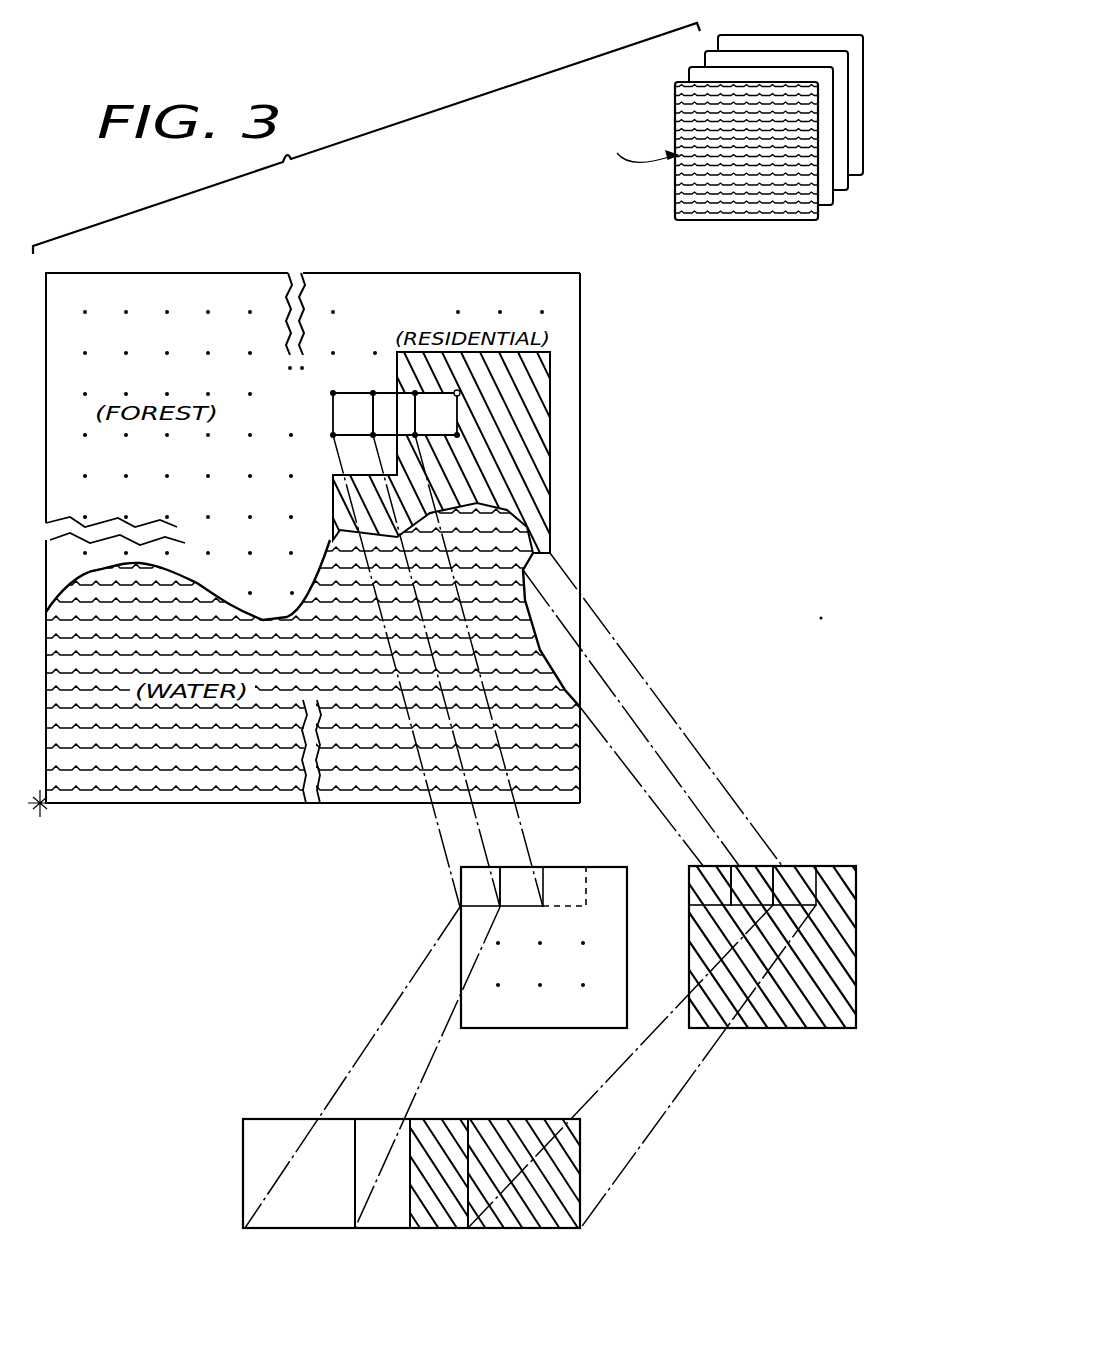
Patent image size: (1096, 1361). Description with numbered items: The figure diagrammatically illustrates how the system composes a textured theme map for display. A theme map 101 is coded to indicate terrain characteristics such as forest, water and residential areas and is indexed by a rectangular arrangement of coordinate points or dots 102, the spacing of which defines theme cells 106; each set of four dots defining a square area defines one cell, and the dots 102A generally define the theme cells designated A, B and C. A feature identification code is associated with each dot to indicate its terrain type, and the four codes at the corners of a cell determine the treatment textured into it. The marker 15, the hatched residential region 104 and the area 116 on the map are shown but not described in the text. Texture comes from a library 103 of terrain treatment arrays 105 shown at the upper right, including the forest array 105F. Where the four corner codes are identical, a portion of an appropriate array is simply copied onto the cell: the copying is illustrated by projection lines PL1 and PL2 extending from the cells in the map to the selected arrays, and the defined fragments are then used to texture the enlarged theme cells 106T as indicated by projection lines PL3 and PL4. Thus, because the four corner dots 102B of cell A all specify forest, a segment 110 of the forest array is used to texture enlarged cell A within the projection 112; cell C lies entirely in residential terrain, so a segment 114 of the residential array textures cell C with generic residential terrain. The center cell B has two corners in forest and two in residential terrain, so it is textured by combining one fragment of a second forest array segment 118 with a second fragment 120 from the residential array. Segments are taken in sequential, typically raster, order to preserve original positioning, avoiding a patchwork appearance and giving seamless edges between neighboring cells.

The map origin marker 15 is at (132, 780).
The theme map 101 is at (220, 808).
The dots 102 is at (446, 344).
The dots 102A is at (458, 435).
The corner dots 102B is at (333, 435).
The library 103 is at (662, 188).
The residential region hatching 104 is at (465, 385).
The treatment arrays 105 is at (761, 623).
The forest array 105F is at (521, 960).
The theme cells 106 is at (458, 434).
The enlarged theme cells 106T is at (320, 1133).
The segment 110 is at (460, 882).
The projection 112 is at (577, 300).
The segment 114 is at (793, 866).
The residential area 116 is at (555, 553).
The second array segment 118 is at (461, 921).
The second fragment 120 is at (748, 866).
The projection lines PL1 is at (527, 830).
The projection lines PL2 is at (622, 655).
The projection lines PL3 is at (358, 1066).
The projection lines PL4 is at (671, 1098).